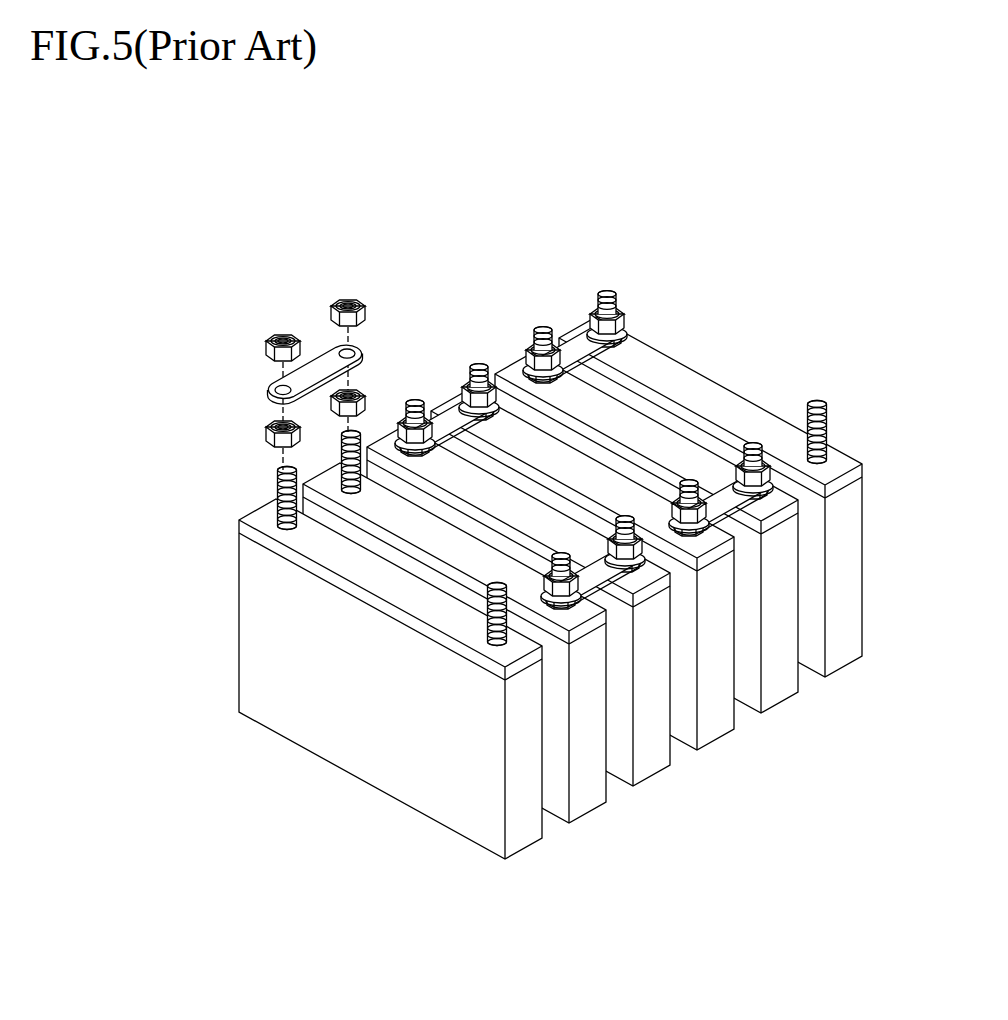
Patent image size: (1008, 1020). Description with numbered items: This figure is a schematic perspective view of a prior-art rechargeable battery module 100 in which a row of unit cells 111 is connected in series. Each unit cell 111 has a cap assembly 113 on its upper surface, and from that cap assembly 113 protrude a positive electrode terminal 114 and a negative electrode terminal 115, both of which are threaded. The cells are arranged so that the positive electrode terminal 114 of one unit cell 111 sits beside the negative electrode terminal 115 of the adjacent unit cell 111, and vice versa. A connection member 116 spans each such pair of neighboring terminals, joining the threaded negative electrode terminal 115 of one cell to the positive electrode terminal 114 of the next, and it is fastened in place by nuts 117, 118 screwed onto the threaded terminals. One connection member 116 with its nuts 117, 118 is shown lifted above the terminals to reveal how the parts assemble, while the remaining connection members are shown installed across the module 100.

The battery module 100 is at (516, 572).
The unit cell 111 is at (516, 592).
The cap assembly 113 is at (317, 548).
The positive electrode terminal 114 is at (278, 492).
The negative electrode terminal 115 is at (353, 445).
The connection member 116 is at (325, 362).
The nut 117 is at (266, 436).
The nut 118 is at (267, 350).